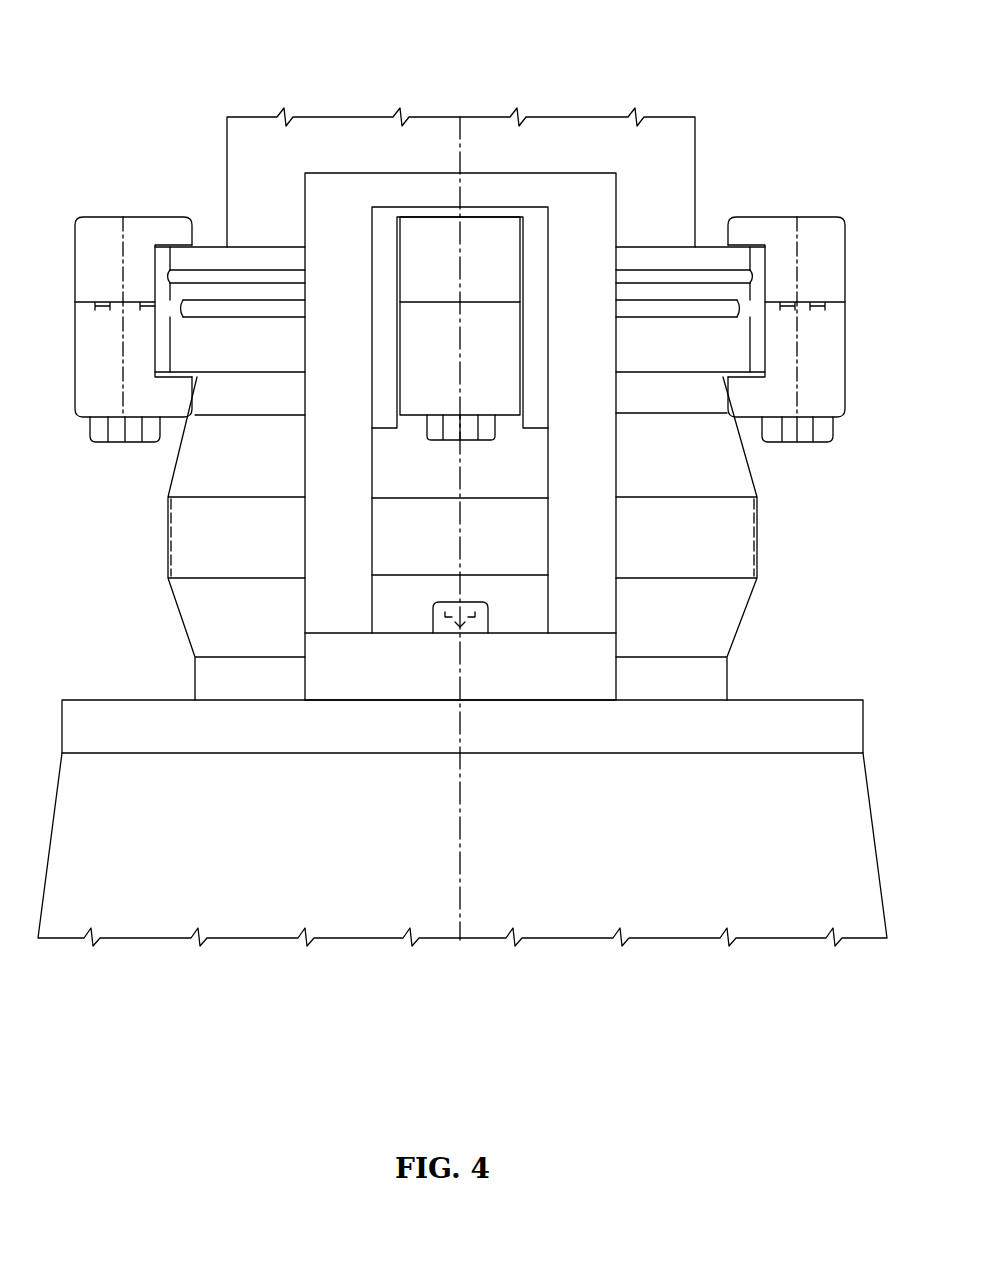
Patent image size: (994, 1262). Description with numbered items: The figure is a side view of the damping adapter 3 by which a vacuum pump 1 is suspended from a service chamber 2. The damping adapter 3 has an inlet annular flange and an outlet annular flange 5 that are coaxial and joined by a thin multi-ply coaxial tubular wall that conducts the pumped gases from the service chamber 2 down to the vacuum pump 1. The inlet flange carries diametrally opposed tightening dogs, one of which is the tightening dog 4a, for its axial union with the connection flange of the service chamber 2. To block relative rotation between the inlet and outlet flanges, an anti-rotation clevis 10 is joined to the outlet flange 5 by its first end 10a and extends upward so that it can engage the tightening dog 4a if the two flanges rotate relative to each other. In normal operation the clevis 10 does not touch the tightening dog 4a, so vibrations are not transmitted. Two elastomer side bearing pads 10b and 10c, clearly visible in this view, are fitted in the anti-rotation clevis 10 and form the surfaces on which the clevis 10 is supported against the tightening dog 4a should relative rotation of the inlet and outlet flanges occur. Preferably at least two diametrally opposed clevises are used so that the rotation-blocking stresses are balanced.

The vacuum pump 1 is at (125, 907).
The service chamber 2 is at (252, 130).
The damping adapter 3 is at (773, 522).
The tightening dog 4a is at (427, 370).
The outlet annular flange 5 is at (815, 718).
The anti-rotation clevis 10 is at (328, 538).
The first end 10a is at (352, 675).
The elastomer side bearing pad 10b is at (378, 270).
The elastomer side bearing pad 10c is at (542, 257).